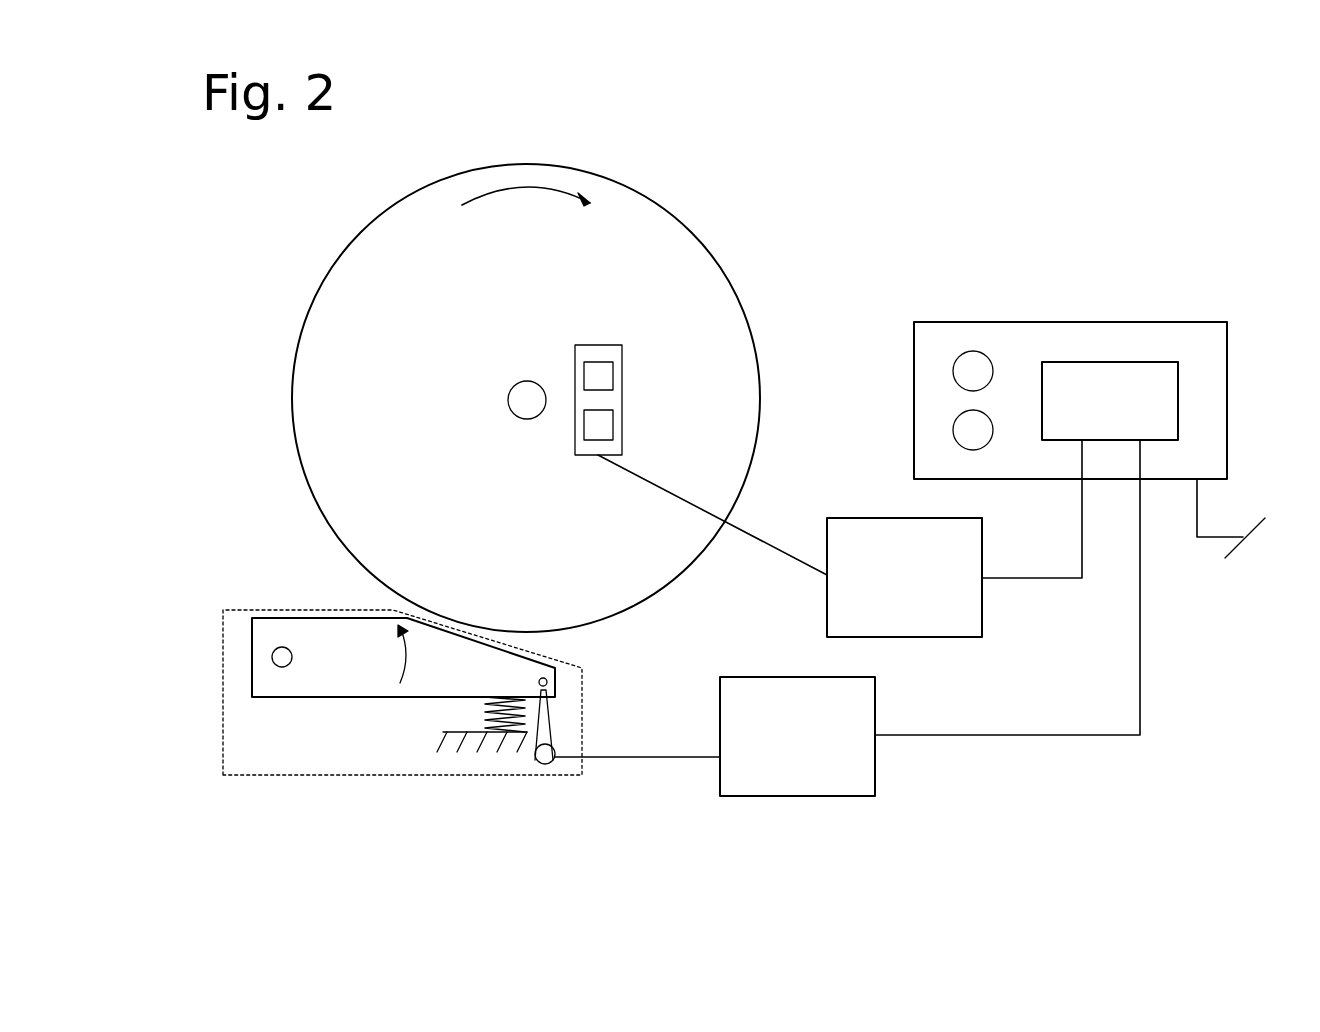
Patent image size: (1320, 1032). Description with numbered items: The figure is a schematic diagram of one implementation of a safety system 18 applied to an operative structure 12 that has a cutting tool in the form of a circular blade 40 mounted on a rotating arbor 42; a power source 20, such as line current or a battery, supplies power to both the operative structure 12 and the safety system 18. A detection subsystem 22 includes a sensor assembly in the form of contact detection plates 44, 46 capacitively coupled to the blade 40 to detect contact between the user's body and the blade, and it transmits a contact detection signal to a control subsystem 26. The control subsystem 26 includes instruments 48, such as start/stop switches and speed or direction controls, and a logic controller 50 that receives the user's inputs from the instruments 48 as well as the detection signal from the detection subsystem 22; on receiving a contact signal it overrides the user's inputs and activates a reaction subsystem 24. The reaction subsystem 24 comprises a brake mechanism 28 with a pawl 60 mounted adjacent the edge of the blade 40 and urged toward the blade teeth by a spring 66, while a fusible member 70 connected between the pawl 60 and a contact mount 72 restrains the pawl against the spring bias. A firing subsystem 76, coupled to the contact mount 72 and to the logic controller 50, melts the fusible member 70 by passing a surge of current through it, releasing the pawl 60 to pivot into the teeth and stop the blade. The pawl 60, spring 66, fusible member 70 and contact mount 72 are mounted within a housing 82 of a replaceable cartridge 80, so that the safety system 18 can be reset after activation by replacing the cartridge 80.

The operative structure 12 is at (752, 170).
The safety system 18 is at (1064, 210).
The power source 20 is at (1237, 532).
The detection subsystem 22 is at (904, 577).
The reaction subsystem 24 is at (827, 782).
The control subsystem 26 is at (1110, 322).
The brake mechanism 28 is at (298, 724).
The circular blade 40 is at (418, 263).
The arbor 42 is at (515, 405).
The contact detection plate 44 is at (608, 370).
The contact detection plate 46 is at (608, 420).
The instruments 48 is at (963, 372).
The logic controller 50 is at (1110, 401).
The pawl 60 is at (307, 628).
The spring 66 is at (462, 717).
The fusible member 70 is at (553, 735).
The contact mount 72 is at (538, 763).
The firing subsystem 76 is at (797, 736).
The replaceable cartridge 80 is at (255, 814).
The housing 82 is at (322, 775).